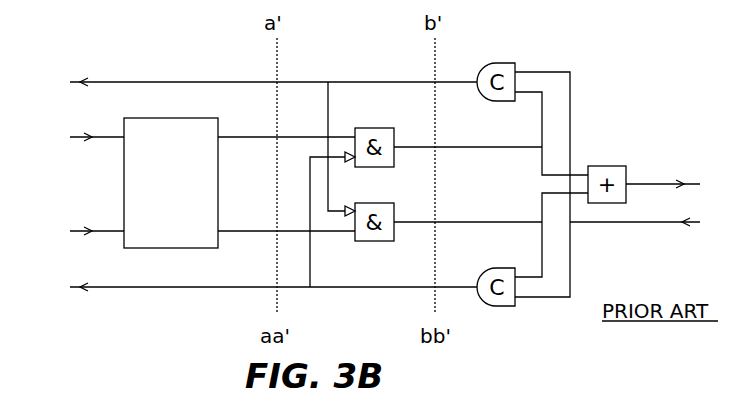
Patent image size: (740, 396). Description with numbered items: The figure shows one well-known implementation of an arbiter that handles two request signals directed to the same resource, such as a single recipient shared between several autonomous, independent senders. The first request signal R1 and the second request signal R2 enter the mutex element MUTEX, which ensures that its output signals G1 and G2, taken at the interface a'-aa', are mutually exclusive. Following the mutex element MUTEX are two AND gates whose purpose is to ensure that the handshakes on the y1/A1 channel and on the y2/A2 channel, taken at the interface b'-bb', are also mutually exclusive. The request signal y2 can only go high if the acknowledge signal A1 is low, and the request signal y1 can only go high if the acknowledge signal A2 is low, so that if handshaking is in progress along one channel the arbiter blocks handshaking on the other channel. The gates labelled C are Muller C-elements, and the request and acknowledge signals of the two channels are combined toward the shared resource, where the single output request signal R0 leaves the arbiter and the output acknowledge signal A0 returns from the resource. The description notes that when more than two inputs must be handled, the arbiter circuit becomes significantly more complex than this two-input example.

The mutex element MUTEX is at (171, 183).
The acknowledge signal A1 is at (253, 79).
The request signal R1 is at (77, 137).
The request signal R2 is at (77, 231).
The acknowledge signal A2 is at (253, 284).
The signal G1 is at (286, 126).
The signal G2 is at (286, 220).
The request signal y1 is at (468, 137).
The request signal y2 is at (468, 211).
The output request signal R0 is at (682, 184).
The output acknowledge signal A0 is at (654, 222).